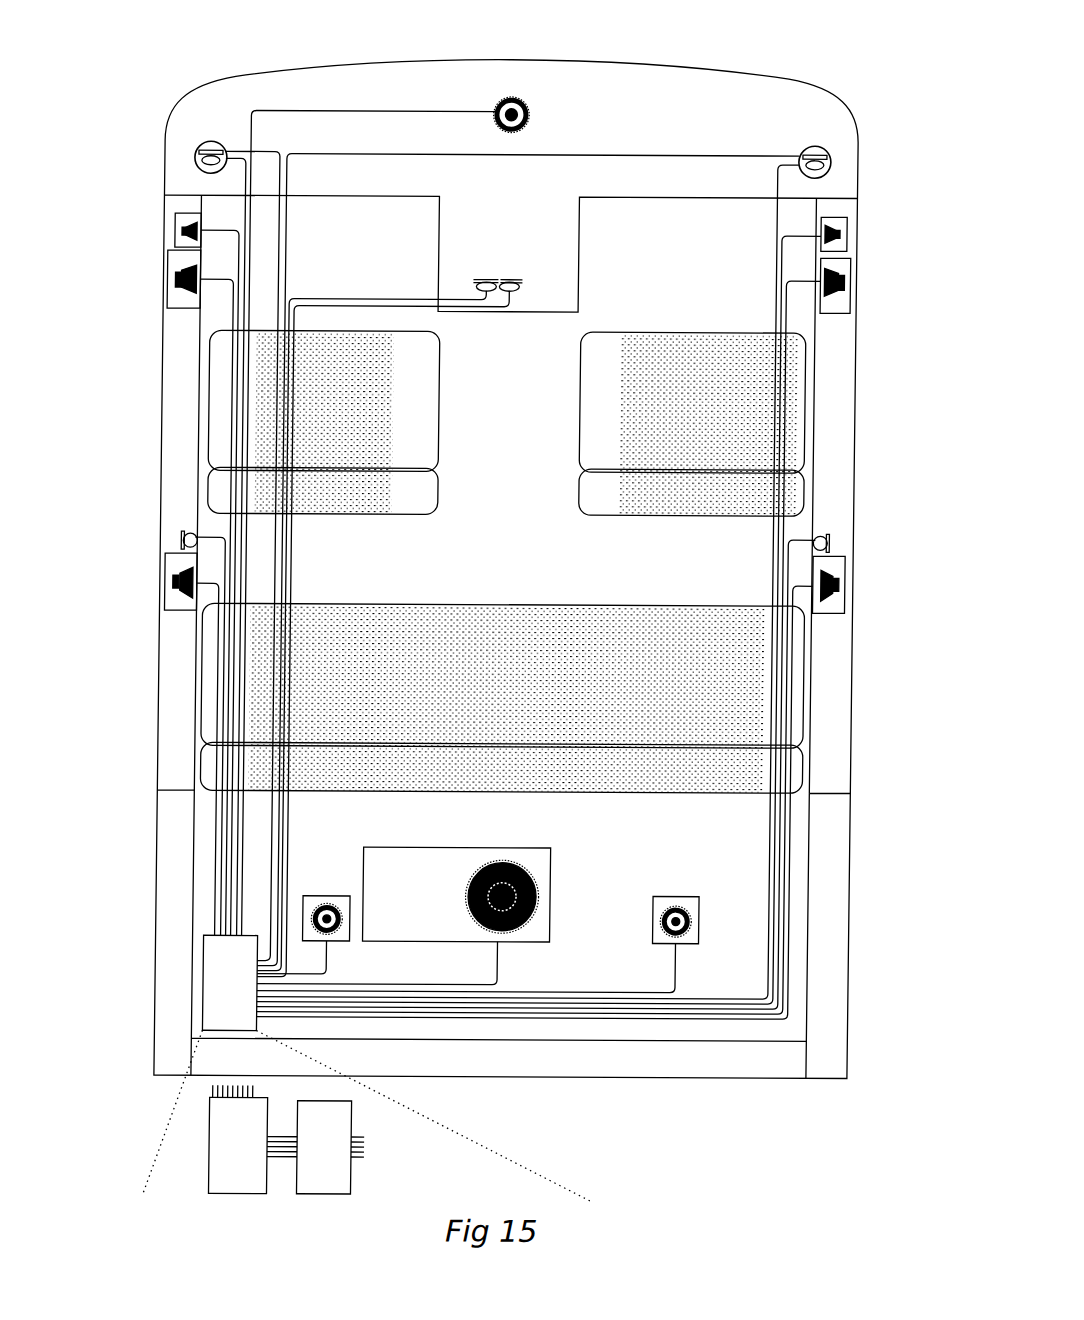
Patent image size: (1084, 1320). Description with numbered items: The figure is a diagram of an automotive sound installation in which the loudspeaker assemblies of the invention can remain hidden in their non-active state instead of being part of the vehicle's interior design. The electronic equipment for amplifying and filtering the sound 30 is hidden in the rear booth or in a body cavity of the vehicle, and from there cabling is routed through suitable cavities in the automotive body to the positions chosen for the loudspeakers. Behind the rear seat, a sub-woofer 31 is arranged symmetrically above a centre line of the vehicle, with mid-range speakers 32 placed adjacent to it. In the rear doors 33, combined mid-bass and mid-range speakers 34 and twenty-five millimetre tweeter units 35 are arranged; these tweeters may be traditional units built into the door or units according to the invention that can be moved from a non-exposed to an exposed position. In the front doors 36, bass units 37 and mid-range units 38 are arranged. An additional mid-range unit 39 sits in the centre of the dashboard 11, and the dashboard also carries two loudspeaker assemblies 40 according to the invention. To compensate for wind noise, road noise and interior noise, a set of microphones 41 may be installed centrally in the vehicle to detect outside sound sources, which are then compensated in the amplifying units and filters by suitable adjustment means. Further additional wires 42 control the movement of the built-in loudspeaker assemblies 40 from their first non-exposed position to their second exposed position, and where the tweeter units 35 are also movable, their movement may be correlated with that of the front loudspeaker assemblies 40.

The dashboard 11 is at (708, 107).
The electronic equipment for amplifying and filtering the sound 30 is at (304, 1218).
The sub-woofer 31 is at (531, 936).
The mid-range speakers 32 is at (343, 930).
The rear doors 33 is at (177, 717).
The combined mid-bass and mid-range speakers 34 is at (182, 599).
The tweeter units 35 is at (188, 538).
The front doors 36 is at (177, 407).
The bass units 37 is at (182, 296).
The mid-range units 38 is at (185, 230).
The additional mid-range unit 39 is at (521, 100).
The loudspeaker assemblies 40 is at (208, 141).
The microphones 41 is at (487, 276).
The additional wires 42 is at (243, 208).